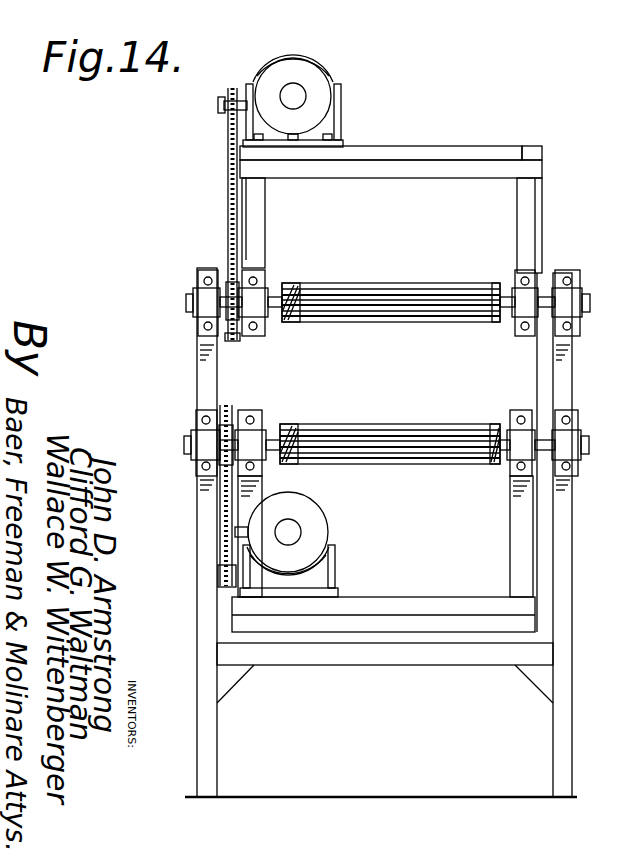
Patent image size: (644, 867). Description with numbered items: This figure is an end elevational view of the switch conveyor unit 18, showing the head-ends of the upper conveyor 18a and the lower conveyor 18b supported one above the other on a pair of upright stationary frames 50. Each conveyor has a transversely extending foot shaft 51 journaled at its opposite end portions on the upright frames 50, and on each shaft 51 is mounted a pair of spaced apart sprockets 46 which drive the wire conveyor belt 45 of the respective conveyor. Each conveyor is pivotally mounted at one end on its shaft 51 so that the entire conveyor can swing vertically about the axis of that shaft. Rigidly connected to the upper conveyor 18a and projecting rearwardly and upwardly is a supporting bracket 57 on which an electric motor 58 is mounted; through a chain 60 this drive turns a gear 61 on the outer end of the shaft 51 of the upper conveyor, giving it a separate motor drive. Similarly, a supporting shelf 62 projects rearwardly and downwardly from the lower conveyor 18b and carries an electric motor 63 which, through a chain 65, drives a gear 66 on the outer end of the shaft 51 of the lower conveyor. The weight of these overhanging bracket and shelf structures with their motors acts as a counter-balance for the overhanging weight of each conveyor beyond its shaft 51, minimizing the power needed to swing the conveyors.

The switch conveyor unit 18 is at (495, 262).
The upper conveyor 18a is at (372, 285).
The lower conveyor 18b is at (375, 424).
The wire conveyor belt 45 is at (438, 284).
The sprockets 46 is at (280, 290).
The upright stationary frames 50 is at (566, 522).
The foot shaft 51 is at (546, 320).
The supporting bracket 57 is at (352, 163).
The electric motor 58 is at (321, 100).
The chain 60 is at (231, 194).
The gear 61 is at (224, 337).
The supporting shelf 62 is at (393, 592).
The electric motor 63 is at (322, 522).
The chain 65 is at (218, 497).
The gear 66 is at (229, 418).